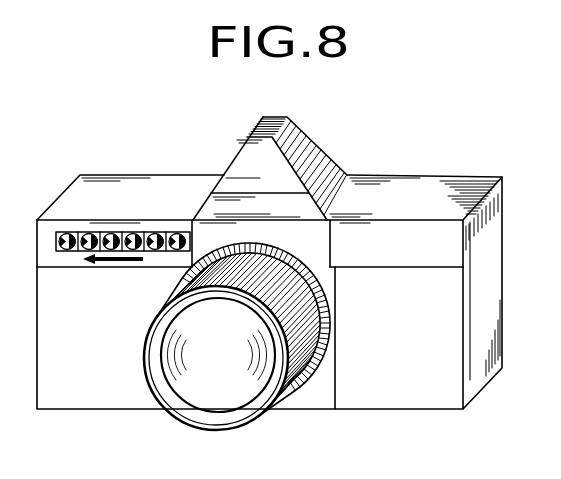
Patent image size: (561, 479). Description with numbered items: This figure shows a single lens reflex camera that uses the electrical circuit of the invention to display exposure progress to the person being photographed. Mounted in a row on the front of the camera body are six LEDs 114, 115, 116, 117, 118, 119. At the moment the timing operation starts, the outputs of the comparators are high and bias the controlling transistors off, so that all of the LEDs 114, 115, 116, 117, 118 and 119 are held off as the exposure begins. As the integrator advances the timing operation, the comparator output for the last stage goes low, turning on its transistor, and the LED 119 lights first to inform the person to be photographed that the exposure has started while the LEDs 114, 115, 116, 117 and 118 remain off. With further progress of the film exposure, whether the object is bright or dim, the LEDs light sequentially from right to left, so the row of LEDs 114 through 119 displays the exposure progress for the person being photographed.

The LED 114 is at (63, 232).
The LED 115 is at (90, 232).
The LED 116 is at (112, 232).
The LED 117 is at (134, 232).
The LED 118 is at (156, 232).
The LED 119 is at (178, 232).